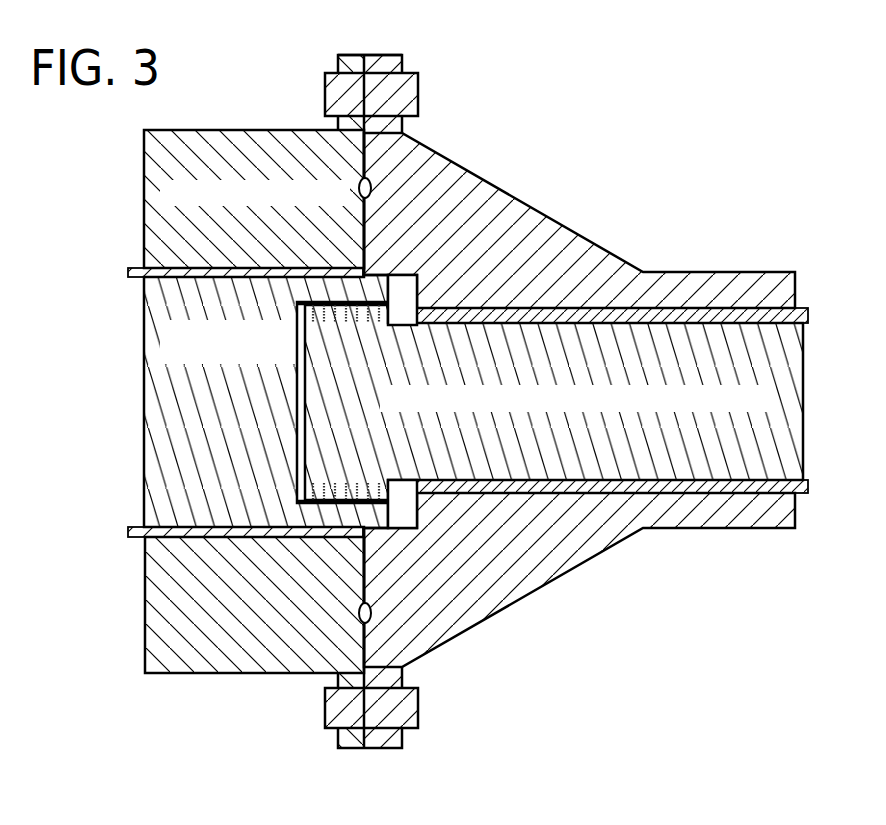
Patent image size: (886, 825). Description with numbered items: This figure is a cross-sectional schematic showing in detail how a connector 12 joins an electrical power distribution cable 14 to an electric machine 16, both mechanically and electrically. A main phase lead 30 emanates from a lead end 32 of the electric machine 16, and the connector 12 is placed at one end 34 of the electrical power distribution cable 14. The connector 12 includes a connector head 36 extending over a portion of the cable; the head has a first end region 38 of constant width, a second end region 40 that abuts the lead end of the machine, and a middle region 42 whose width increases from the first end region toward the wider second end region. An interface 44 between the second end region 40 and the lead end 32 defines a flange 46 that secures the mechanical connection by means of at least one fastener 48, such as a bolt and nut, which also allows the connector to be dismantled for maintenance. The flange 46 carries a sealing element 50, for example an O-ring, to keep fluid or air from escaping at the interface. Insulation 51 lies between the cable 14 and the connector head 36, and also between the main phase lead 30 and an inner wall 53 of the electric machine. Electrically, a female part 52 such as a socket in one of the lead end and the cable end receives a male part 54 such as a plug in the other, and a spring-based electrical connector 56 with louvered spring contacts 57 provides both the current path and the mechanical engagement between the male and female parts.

The connector 12 is at (580, 129).
The electrical power distribution cable 14 is at (670, 460).
The electric machine 16 is at (145, 633).
The main phase lead 30 is at (145, 321).
The lead end 32 is at (388, 528).
The end of the electrical power distribution cable 34 is at (307, 468).
The connector head 36 is at (527, 603).
The first end region 38 is at (728, 273).
The second end region 40 is at (397, 63).
The middle region 42 is at (573, 570).
The interface 44 is at (293, 430).
The flange 46 is at (342, 65).
The fastener 48 is at (419, 99).
The sealing element 50 is at (372, 185).
The insulation 51 is at (133, 267).
The female part 52 is at (293, 452).
The inner wall 53 is at (172, 267).
The male part 54 is at (322, 405).
The spring-based electrical connector 56 is at (397, 293).
The louvered spring contacts 57 is at (373, 492).